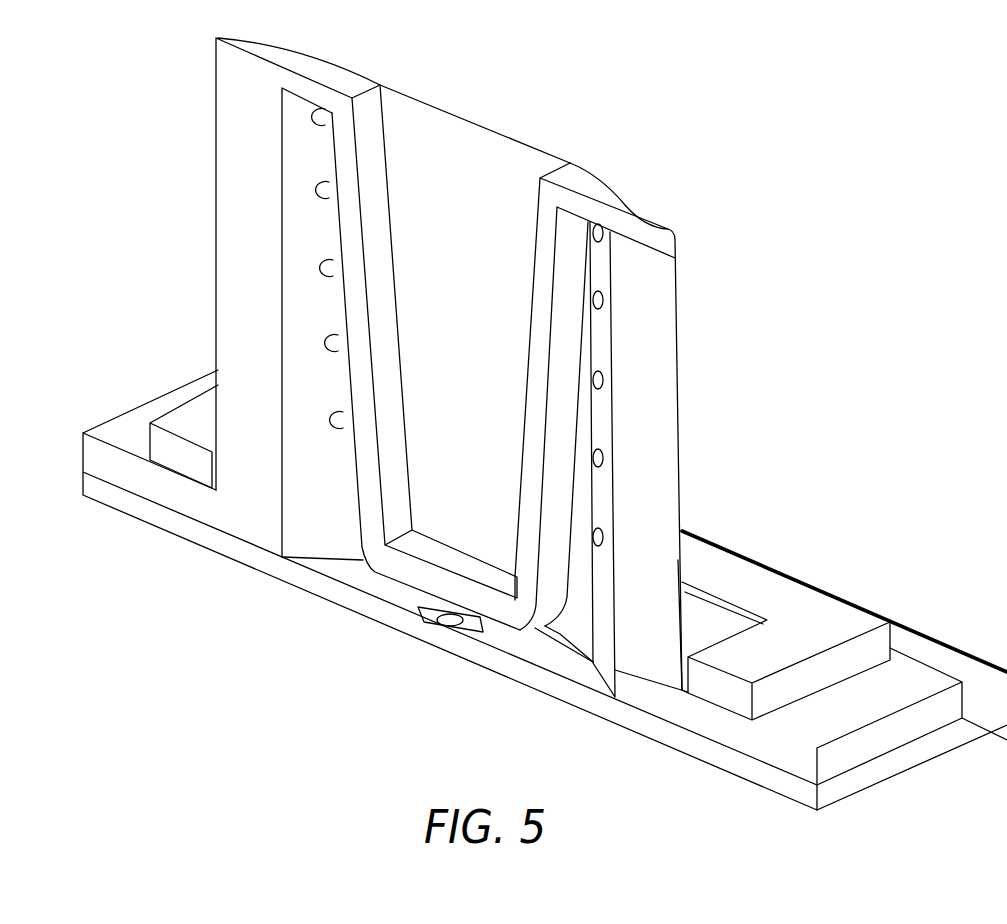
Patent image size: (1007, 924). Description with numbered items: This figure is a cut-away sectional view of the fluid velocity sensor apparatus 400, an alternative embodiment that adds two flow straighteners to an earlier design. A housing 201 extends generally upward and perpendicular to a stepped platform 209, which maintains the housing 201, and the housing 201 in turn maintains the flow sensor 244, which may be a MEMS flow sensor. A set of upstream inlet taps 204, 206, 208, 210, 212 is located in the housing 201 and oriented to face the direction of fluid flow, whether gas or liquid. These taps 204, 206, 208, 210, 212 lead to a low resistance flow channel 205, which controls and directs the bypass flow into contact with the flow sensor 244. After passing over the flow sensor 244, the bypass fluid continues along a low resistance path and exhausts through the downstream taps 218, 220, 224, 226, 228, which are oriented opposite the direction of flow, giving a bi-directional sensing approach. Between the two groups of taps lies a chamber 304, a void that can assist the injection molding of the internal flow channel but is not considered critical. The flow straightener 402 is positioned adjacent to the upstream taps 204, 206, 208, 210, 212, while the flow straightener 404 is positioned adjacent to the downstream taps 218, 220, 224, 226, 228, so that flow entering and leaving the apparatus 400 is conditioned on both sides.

The fluid velocity sensor apparatus 400 is at (545, 420).
The flow straightener 404 is at (242, 80).
The flow straightener 402 is at (680, 424).
The chamber 304 is at (451, 122).
The housing 201 is at (585, 177).
The flow channel 205 is at (570, 636).
The upstream tap 204 is at (613, 233).
The upstream tap 206 is at (606, 307).
The upstream tap 208 is at (606, 386).
The upstream tap 210 is at (606, 463).
The upstream tap 212 is at (606, 541).
The exhaust tap 218 is at (315, 118).
The exhaust tap 220 is at (318, 192).
The exhaust tap 224 is at (320, 269).
The exhaust tap 226 is at (323, 347).
The exhaust tap 228 is at (328, 423).
The flow sensor 244 is at (427, 611).
The stepped platform 209 is at (870, 584).